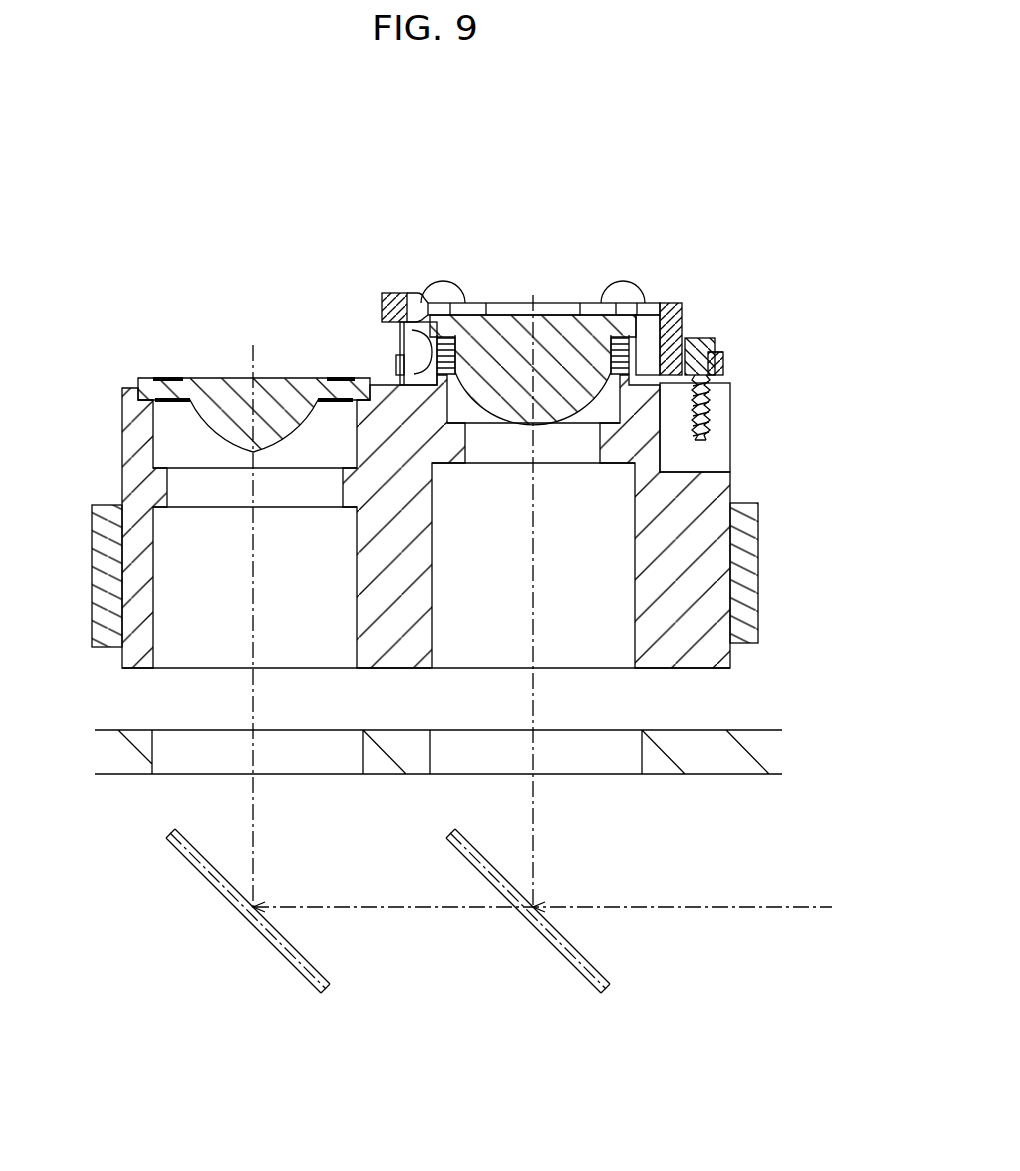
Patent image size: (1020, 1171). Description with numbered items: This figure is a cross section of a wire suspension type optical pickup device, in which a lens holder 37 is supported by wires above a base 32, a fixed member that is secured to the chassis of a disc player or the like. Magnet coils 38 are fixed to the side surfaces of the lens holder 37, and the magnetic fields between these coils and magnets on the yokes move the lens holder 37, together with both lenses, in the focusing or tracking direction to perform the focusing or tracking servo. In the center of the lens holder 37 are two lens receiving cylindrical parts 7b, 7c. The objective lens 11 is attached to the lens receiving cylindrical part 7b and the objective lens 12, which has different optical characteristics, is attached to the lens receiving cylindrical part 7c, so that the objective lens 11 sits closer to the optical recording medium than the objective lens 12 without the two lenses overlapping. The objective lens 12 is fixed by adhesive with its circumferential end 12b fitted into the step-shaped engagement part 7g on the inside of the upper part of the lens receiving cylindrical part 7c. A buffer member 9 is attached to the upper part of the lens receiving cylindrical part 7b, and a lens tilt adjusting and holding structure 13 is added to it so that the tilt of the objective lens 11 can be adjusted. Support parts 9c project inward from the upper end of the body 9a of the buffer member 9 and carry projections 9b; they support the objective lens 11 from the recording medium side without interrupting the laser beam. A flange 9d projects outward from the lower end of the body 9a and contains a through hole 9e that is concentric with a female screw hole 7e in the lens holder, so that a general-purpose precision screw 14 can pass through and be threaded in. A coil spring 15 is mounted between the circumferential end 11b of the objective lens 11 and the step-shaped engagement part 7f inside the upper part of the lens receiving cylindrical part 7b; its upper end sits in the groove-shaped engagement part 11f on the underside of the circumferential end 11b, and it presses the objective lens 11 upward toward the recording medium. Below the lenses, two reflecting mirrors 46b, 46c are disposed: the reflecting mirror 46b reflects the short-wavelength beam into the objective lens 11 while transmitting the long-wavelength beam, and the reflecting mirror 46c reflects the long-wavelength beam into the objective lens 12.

The lens receiving cylindrical part 7b is at (663, 442).
The lens receiving cylindrical part 7c is at (122, 458).
The female screw hole 7e is at (708, 412).
The engagement part 7f is at (445, 390).
The engagement part 7g is at (140, 402).
The buffer member 9 is at (394, 292).
The body 9a is at (668, 303).
The projection 9b is at (443, 282).
The support part 9c is at (466, 303).
The flange 9d is at (723, 364).
The through hole 9e is at (722, 353).
The objective lens 11 is at (522, 303).
The circumferential end 11b is at (400, 340).
The engagement part 11f is at (398, 362).
The objective lens 12 is at (226, 378).
The circumferential end 12b is at (142, 380).
The lens tilt adjusting and holding structure 13 is at (578, 317).
The precision screw 14 is at (700, 340).
The coil spring 15 is at (447, 378).
The base 32 is at (760, 730).
The lens holder 37 is at (124, 395).
The magnet coil 38 is at (92, 580).
The reflecting mirror 46b is at (605, 952).
The reflecting mirror 46c is at (325, 955).